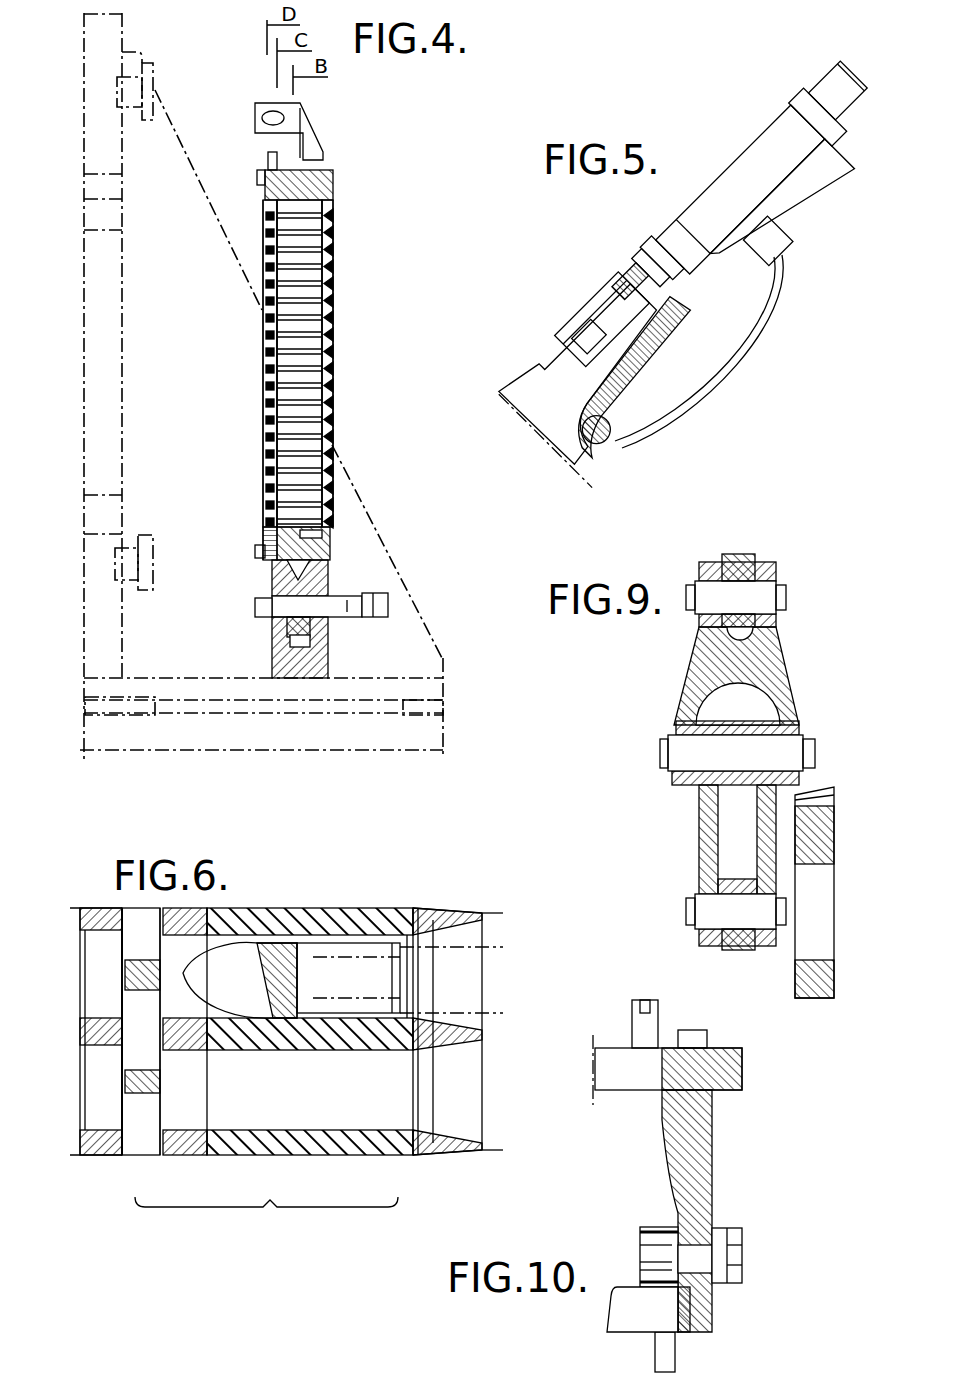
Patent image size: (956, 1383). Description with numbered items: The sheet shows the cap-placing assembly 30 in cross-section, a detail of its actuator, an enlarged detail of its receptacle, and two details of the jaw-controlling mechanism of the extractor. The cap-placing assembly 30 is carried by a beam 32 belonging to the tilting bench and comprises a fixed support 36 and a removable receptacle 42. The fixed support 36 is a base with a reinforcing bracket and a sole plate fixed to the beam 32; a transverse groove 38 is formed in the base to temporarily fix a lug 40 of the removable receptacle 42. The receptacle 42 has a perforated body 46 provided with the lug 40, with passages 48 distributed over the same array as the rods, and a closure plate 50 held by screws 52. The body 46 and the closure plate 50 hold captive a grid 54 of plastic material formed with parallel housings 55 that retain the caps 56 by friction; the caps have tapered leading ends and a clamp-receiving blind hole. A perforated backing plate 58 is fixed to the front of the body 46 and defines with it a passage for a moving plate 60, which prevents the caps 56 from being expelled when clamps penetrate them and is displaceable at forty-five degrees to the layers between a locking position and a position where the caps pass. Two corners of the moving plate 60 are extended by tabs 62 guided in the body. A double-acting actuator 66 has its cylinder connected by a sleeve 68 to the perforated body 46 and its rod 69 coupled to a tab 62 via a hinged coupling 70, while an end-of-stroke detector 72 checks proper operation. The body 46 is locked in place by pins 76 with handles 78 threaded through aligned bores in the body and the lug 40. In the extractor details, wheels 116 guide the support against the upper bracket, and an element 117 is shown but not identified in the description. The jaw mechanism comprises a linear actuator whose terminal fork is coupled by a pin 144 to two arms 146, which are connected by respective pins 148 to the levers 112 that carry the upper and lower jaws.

In FIG. 4, the cap-placing assembly 30 is at (352, 196).
In FIG. 4, the beam 32 is at (365, 752).
In FIG. 4, the fixed support 36 is at (300, 660).
In FIG. 4, the transverse groove 38 is at (272, 588).
In FIG. 4, the lug 40 is at (330, 626).
In FIG. 6, the removable receptacle 42 is at (266, 1220).
In FIG. 4, the perforated body 46 is at (337, 548).
In FIG. 5, the perforated body 46 is at (587, 460).
In FIG. 6, the perforated body 46 is at (184, 1120).
In FIG. 6, the passages 48 is at (162, 1136).
In FIG. 4, the closure plate 50 is at (330, 518).
In FIG. 6, the closure plate 50 is at (434, 1148).
In FIG. 4, the screws 52 is at (335, 538).
In FIG. 4, the grid 54 is at (300, 430).
In FIG. 6, the grid 54 is at (370, 1145).
In FIG. 6, the housings 55 is at (352, 1009).
In FIG. 6, the caps 56 is at (232, 978).
In FIG. 4, the backing plate 58 is at (262, 347).
In FIG. 6, the backing plate 58 is at (102, 1030).
In FIG. 4, the moving plate 60 is at (272, 380).
In FIG. 6, the moving plate 60 is at (143, 1057).
In FIG. 5, the tabs 62 is at (560, 367).
In FIG. 5, the double-acting actuator 66 is at (773, 140).
In FIG. 5, the sleeve 68 is at (622, 417).
In FIG. 5, the rod 69 is at (630, 288).
In FIG. 5, the hinged coupling 70 is at (580, 302).
In FIG. 5, the end-of-stroke detector 72 is at (797, 195).
In FIG. 4, the pins 76 is at (292, 604).
In FIG. 4, the handles 78 is at (350, 598).
In FIG. 9, the levers 112 is at (749, 558).
In FIG. 10, the wheels 116 is at (660, 1247).
In FIG. 10, the screw 117 is at (690, 1313).
In FIG. 9, the pin 144 is at (699, 756).
In FIG. 9, the arms 146 is at (709, 660).
In FIG. 9, the pins 148 is at (718, 593).